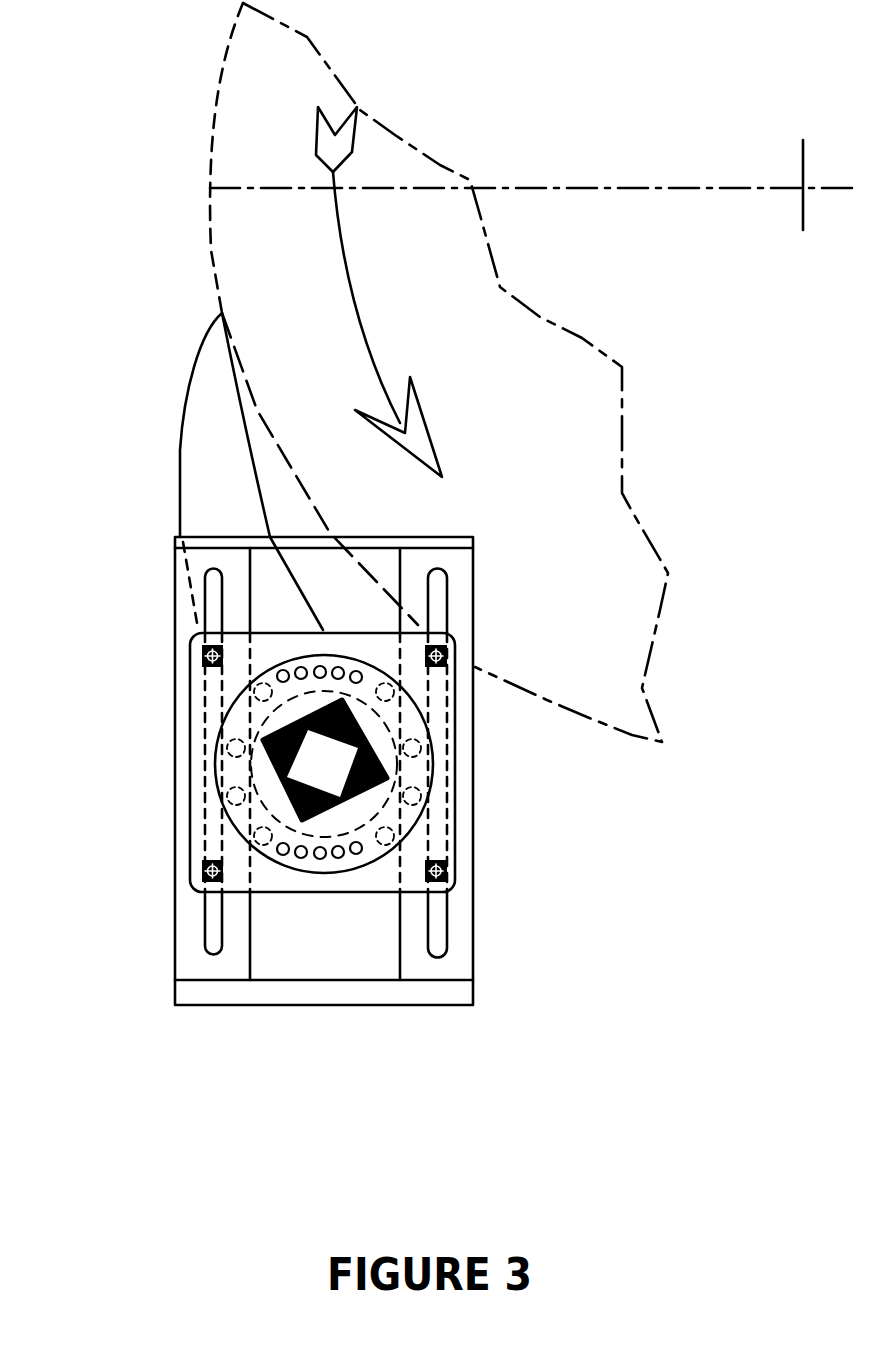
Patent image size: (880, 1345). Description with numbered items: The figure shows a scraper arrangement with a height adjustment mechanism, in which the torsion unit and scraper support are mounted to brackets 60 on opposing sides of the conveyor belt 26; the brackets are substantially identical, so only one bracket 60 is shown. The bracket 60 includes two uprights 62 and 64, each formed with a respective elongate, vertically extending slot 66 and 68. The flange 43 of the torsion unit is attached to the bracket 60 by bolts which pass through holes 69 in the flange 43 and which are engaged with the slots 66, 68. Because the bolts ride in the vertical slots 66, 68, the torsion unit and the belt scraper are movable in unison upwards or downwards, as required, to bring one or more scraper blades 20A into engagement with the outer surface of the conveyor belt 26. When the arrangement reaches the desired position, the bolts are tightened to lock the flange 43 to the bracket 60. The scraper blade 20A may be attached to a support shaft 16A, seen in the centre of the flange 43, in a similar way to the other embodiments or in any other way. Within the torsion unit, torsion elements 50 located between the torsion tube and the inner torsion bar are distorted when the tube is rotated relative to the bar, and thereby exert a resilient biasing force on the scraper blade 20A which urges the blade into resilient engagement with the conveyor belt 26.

The support shaft 16A is at (397, 788).
The scraper blade 20A is at (186, 363).
The conveyor belt 26 is at (212, 210).
The flange 43 is at (207, 672).
The torsion elements 50 is at (268, 780).
The bracket 60 is at (521, 968).
The upright 62 is at (213, 955).
The upright 64 is at (417, 963).
The slot 66 is at (210, 930).
The slot 68 is at (447, 920).
The holes 69 is at (205, 872).